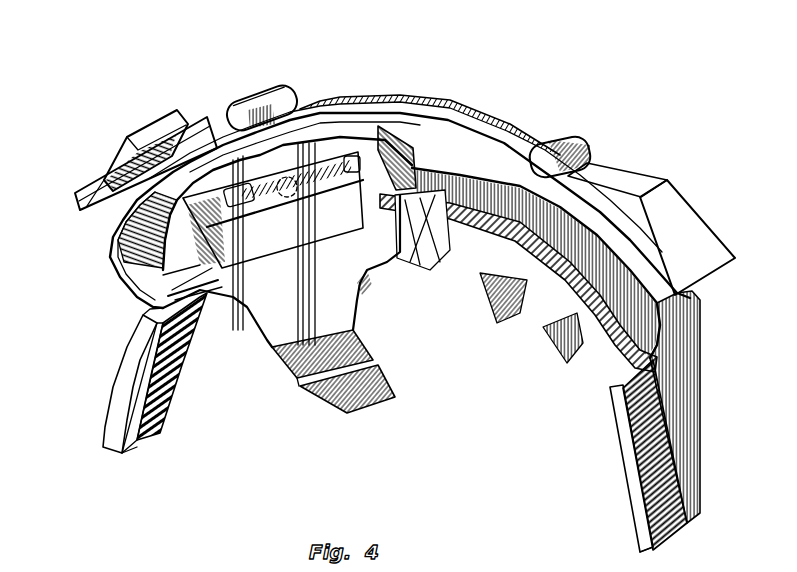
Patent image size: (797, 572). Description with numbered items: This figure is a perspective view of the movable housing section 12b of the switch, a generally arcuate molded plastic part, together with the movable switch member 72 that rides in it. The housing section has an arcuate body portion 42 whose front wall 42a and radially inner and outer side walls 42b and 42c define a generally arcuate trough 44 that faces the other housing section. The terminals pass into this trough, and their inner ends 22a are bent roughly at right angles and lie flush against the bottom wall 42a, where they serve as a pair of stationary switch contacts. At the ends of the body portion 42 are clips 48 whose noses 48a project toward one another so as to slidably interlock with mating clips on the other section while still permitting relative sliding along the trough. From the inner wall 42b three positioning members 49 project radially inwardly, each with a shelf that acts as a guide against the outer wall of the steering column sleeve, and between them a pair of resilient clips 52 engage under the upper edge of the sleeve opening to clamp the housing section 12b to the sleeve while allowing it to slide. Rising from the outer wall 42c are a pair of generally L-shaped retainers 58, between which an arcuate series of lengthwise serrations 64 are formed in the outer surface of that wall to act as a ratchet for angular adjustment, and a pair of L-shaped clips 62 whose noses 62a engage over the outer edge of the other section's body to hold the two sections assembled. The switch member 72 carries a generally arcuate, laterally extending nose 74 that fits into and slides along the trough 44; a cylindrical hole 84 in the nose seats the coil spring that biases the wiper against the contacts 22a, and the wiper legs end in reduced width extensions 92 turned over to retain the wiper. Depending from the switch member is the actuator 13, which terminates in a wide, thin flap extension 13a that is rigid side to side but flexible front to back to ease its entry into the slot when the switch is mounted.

The housing section 12b is at (429, 40).
The switch actuator 13 is at (345, 290).
The flap extension 13a is at (341, 408).
The terminal inner ends 22a is at (537, 198).
The arcuate body portion 42 is at (441, 235).
The front wall 42a is at (716, 407).
The radially inner side wall 42b is at (518, 289).
The radially outer side wall 42c is at (437, 98).
The arcuate trough 44 is at (617, 163).
The clips 48 is at (109, 385).
The noses 48a is at (153, 478).
The positioning members 49 is at (422, 251).
The resilient clips 52 is at (482, 315).
The retainers 58 is at (262, 85).
The L-shaped clips 62 is at (145, 129).
The noses 62a is at (117, 161).
The serrations 64 is at (406, 146).
The movable switch member 72 is at (217, 309).
The nose 74 is at (367, 115).
The cylindrical hole 84 is at (288, 244).
The reduced width extensions 92 is at (275, 221).